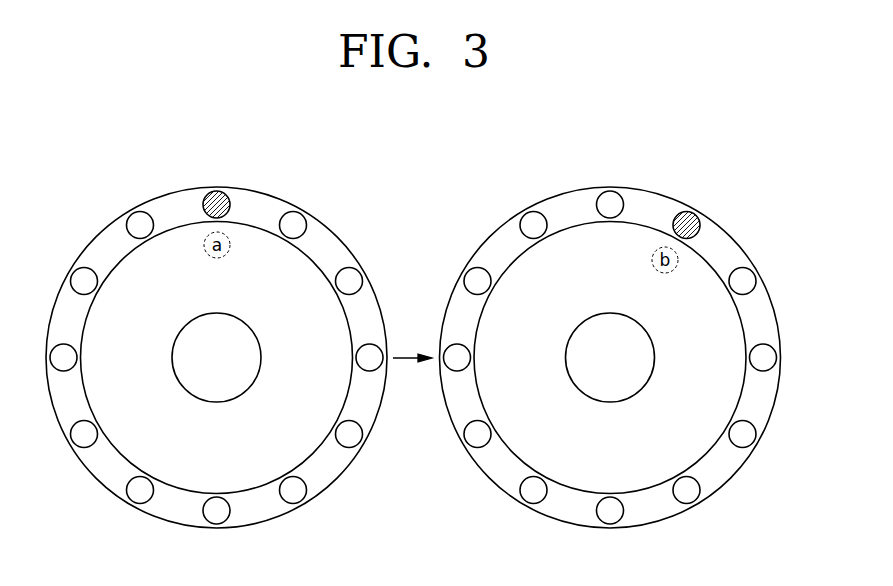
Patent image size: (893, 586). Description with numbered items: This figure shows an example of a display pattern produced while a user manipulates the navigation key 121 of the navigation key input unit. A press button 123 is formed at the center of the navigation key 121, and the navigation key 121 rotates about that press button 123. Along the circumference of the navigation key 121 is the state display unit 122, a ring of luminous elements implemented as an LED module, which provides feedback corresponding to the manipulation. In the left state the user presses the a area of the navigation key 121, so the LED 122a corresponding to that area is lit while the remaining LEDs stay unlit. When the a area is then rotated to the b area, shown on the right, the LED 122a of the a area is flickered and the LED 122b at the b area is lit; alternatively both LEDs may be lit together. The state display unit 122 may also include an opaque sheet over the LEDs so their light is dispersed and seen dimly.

The navigation key 121 is at (303, 443).
The state display unit 122 is at (268, 200).
The LED 122a is at (218, 191).
The second button 122b is at (306, 235).
The press button 123 is at (211, 396).